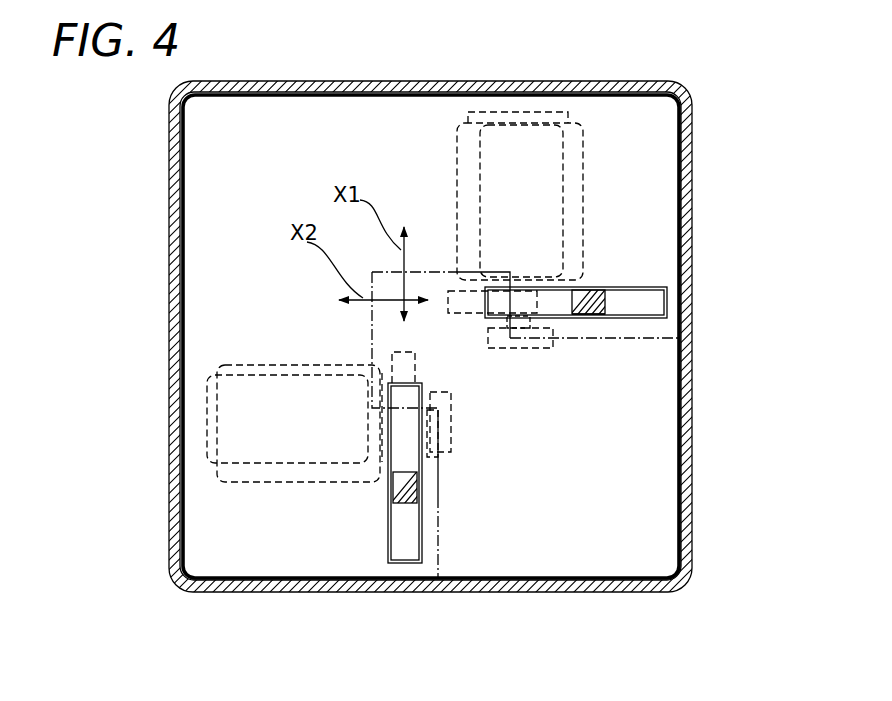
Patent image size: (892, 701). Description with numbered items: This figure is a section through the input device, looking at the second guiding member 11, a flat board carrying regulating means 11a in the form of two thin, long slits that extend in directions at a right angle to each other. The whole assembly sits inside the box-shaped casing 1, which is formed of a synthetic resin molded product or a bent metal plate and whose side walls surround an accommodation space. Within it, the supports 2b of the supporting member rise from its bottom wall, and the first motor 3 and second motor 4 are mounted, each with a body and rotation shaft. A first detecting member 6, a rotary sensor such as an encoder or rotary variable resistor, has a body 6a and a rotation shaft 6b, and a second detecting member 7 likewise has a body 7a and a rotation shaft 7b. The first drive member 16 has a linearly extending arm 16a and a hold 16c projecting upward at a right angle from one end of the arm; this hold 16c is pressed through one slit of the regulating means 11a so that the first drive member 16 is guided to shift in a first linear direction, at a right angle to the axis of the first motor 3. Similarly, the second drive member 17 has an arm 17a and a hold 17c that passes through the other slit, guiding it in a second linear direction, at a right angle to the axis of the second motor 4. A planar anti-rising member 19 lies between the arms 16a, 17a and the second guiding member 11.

The casing 1 is at (164, 208).
The supports 2b is at (569, 111).
The first motor 3 is at (246, 487).
The second motor 4 is at (584, 142).
The first detecting member 6 is at (458, 446).
The body 6a is at (452, 425).
The rotation shaft 6b is at (440, 462).
The second detecting member 7 is at (530, 350).
The body 7a is at (500, 349).
The rotation shaft 7b is at (557, 322).
The second guiding member 11 is at (669, 212).
The regulating means 11a is at (648, 287).
The first drive member 16 is at (386, 491).
The arm 16a is at (387, 452).
The hold 16c is at (412, 503).
The second drive member 17 is at (548, 306).
The arm 17a is at (566, 313).
The hold 17c is at (605, 311).
The anti-rising member 19 is at (372, 328).